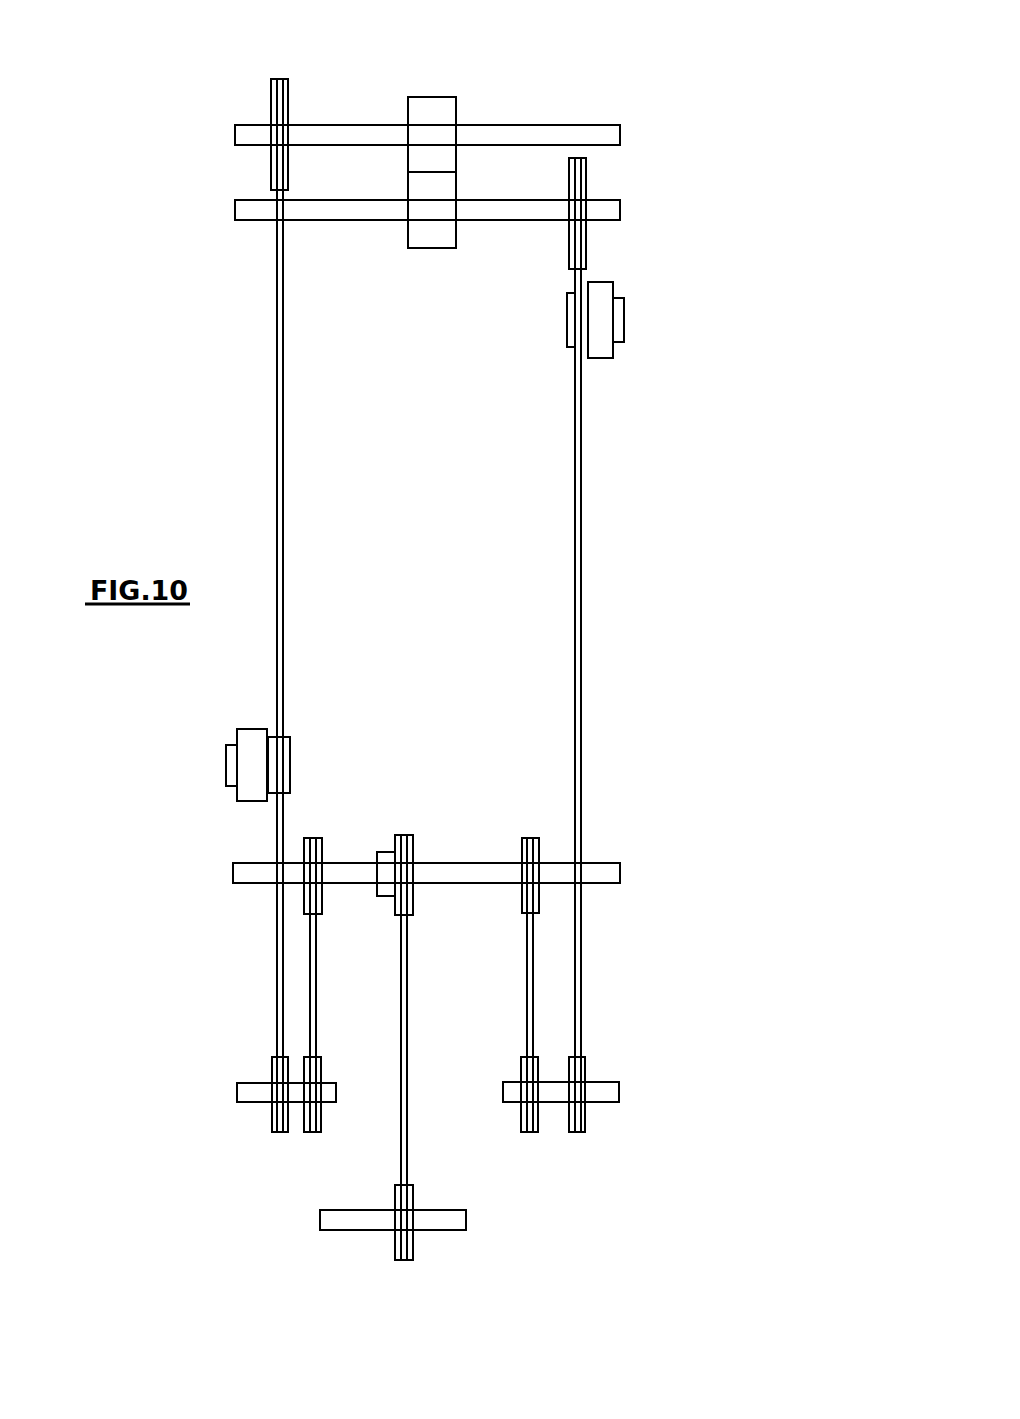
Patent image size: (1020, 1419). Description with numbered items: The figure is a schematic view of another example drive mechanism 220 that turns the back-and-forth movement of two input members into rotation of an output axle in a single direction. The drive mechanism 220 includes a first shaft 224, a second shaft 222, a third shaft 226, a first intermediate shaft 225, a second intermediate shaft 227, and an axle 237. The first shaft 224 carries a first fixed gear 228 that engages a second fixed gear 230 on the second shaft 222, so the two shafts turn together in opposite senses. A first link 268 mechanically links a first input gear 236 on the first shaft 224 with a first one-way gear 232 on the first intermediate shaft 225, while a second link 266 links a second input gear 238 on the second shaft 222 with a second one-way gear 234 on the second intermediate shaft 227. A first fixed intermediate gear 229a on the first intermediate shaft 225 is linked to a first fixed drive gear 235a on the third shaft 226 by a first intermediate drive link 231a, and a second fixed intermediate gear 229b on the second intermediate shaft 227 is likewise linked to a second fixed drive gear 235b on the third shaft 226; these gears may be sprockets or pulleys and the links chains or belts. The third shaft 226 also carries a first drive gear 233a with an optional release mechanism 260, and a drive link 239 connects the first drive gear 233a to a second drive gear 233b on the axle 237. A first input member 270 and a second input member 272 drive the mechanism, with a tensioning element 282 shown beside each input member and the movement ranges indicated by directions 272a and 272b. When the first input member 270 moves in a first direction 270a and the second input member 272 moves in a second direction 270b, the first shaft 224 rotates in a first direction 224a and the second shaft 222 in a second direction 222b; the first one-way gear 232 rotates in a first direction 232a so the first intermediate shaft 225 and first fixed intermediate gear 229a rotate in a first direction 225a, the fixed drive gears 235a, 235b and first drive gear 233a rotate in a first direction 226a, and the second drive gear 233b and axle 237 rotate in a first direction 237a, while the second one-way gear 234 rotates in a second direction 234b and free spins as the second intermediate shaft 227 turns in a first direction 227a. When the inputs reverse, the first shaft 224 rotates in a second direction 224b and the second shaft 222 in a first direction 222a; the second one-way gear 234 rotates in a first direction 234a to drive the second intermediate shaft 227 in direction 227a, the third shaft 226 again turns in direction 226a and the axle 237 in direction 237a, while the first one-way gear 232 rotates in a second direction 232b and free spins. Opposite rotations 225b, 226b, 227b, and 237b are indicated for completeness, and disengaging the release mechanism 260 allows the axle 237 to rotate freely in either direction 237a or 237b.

The drive mechanism 220 is at (732, 46).
The second shaft 222 is at (235, 138).
The first direction of the second shaft 222a is at (152, 172).
The second direction of the second shaft 222b is at (191, 172).
The first shaft 224 is at (621, 212).
The first direction of the first shaft 224a is at (335, 250).
The second direction of the first shaft 224b is at (361, 250).
The first intermediate shaft 225 is at (555, 1082).
The first direction of the first intermediate shaft 225a is at (493, 1132).
The second direction of the first intermediate shaft 225b is at (486, 1147).
The third shaft 226 is at (620, 875).
The first direction of the third shaft 226a is at (152, 913).
The second direction of the third shaft 226b is at (187, 915).
The second intermediate shaft 227 is at (295, 1083).
The first direction of the second intermediate shaft 227a is at (345, 1132).
The second direction of the second intermediate shaft 227b is at (362, 1147).
The first fixed gear 228 is at (432, 248).
The first fixed intermediate gear 229a is at (522, 1057).
The second fixed intermediate gear 229b is at (325, 1057).
The second fixed gear 230 is at (458, 97).
The first intermediate drive link 231a is at (310, 945).
The first one-way gear 232 is at (578, 1132).
The first direction of the first one-way gear 232a is at (630, 1132).
The second direction of the first one-way gear 232b is at (635, 1147).
The first drive gear 233a is at (413, 835).
The second drive gear 233b is at (398, 1260).
The second one-way gear 234 is at (275, 1132).
The first direction of the second one-way gear 234a is at (215, 1132).
The second direction of the second one-way gear 234b is at (205, 1147).
The first fixed drive gear 235a is at (530, 838).
The second fixed drive gear 235b is at (322, 838).
The first input gear 236 is at (587, 180).
The axle 237 is at (445, 1230).
The first direction of the axle 237a is at (298, 1258).
The second direction of the axle 237b is at (336, 1253).
The second input gear 238 is at (288, 79).
The drive link 239 is at (407, 955).
The release mechanism 260 is at (387, 896).
The second link 266 is at (276, 480).
The first link 268 is at (582, 563).
The first input member 270 is at (610, 282).
The first direction of the input members 270a is at (533, 367).
The second direction of the input members 270b is at (533, 376).
The second input member 272 is at (240, 729).
The first movement direction of tensioner 272 272a is at (314, 800).
The second movement direction of tensioner 272 272b is at (315, 806).
The tensioner actuator 282 is at (624, 320).